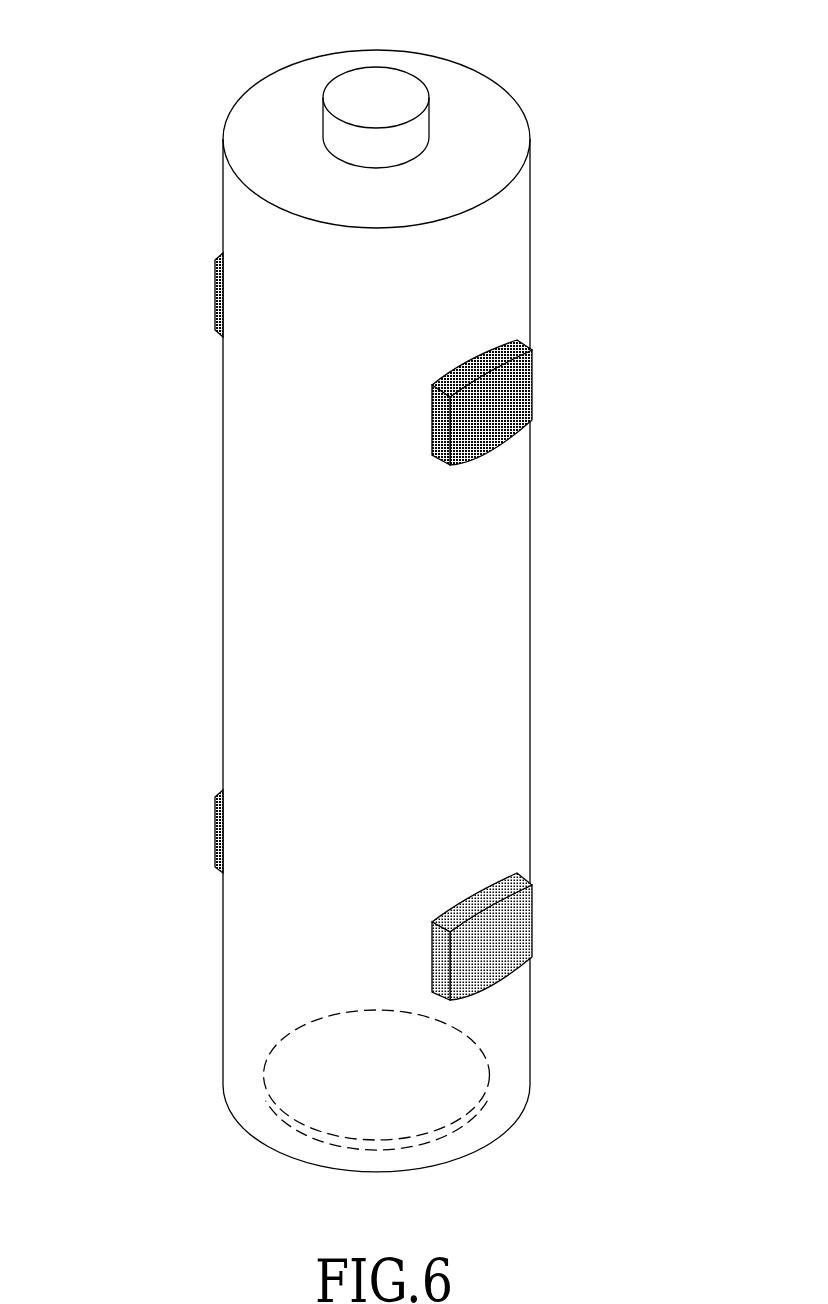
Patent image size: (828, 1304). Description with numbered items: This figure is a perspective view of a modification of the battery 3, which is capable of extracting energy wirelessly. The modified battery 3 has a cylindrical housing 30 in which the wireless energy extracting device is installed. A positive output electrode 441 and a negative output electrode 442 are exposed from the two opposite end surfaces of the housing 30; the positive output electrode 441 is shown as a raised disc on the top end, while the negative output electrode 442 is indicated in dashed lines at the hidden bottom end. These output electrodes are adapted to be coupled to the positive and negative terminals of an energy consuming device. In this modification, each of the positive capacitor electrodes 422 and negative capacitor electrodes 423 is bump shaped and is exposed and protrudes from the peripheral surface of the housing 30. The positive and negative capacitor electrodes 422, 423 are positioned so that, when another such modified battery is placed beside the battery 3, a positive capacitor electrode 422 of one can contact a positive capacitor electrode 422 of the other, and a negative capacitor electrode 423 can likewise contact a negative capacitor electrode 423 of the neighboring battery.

The battery 3 is at (513, 92).
The housing 30 is at (530, 238).
The positive output electrode 441 is at (390, 85).
The negative output electrode 442 is at (453, 1068).
The positive capacitor electrode 422 is at (535, 388).
The negative capacitor electrode 423 is at (520, 923).